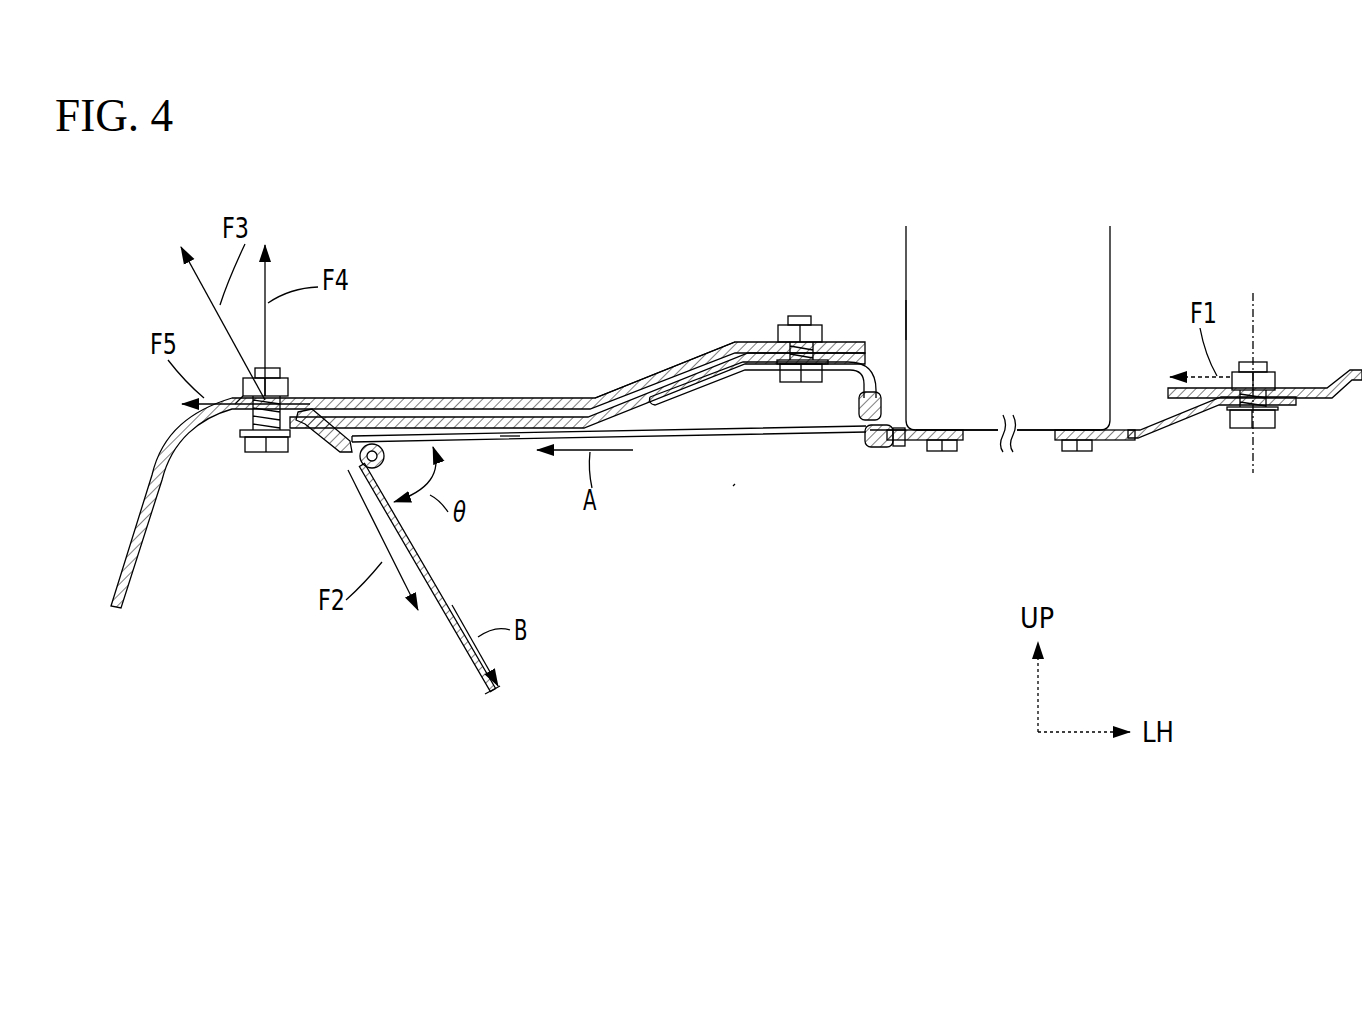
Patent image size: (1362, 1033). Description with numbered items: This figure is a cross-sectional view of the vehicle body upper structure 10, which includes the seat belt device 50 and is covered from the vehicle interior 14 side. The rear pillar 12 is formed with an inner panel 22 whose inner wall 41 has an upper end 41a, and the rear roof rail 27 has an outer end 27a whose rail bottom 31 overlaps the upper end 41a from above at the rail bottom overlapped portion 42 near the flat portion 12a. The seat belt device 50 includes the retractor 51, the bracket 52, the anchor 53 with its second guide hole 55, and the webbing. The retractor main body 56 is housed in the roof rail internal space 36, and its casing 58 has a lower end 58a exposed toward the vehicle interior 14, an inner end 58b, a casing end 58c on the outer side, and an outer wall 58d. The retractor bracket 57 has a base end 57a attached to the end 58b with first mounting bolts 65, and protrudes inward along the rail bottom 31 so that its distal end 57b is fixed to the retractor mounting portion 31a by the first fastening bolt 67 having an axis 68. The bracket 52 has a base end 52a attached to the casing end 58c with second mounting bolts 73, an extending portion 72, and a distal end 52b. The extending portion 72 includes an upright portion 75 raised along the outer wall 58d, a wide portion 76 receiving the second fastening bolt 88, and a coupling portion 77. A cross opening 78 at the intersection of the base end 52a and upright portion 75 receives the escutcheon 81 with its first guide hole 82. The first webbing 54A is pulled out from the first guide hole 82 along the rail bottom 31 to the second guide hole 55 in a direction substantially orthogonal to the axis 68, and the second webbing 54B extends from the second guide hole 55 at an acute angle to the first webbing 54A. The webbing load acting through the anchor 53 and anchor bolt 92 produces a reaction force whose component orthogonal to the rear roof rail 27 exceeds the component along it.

The vehicle body upper structure 10 is at (733, 486).
The rear pillar 12 is at (466, 458).
The flat portion of body panel 12a is at (476, 458).
The vehicle interior 14 is at (866, 648).
The inner panel 22 is at (466, 458).
The rear roof rail 27 is at (577, 357).
The outer end 27a is at (244, 394).
The rail bottom 31 is at (577, 357).
The retractor mounting portion 31a is at (1285, 394).
The roof rail internal space 36 is at (691, 222).
The inner wall 41 is at (200, 401).
The upper end 41a is at (476, 458).
The rail bottom overlapped portion 42 is at (264, 423).
The seat belt device 50 is at (904, 230).
The retractor 51 is at (934, 300).
The bracket 52 is at (577, 357).
The base end 52a is at (910, 446).
The distal end 52b is at (264, 446).
The anchor 53 is at (307, 428).
The first webbing 54A is at (690, 434).
The second webbing 54B is at (462, 652).
The second guide hole 55 is at (362, 465).
The retractor main body 56 is at (948, 392).
The retractor bracket 57 is at (1173, 432).
The base end 57a is at (1220, 460).
The distal end 57b is at (1232, 452).
The casing 58 is at (948, 392).
The lower end 58a is at (1000, 442).
The end 58b is at (1047, 442).
The casing end 58c is at (934, 477).
The outer wall 58d is at (904, 322).
The first mounting bolt 65 is at (1085, 452).
The first fastening bolt 67 is at (1262, 420).
The axis 68 is at (1258, 318).
The extending portion 72 is at (505, 442).
The second mounting bolt 73 is at (936, 452).
The upright portion 75 is at (873, 381).
The wide portion 76 is at (692, 362).
The coupling portion 77 is at (463, 417).
The cross opening 78 is at (872, 409).
The escutcheon 81 is at (882, 447).
The first guide hole 82 is at (866, 433).
The second fastening bolt 88 is at (790, 376).
The anchor bolt 92 is at (258, 442).